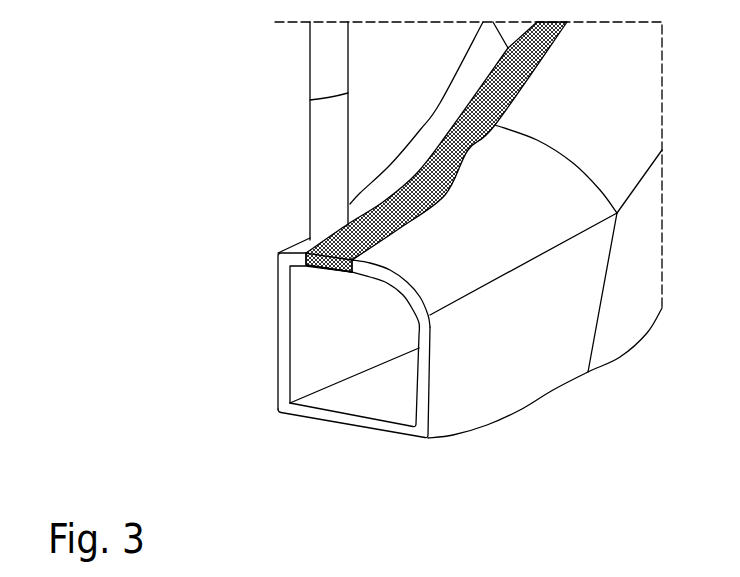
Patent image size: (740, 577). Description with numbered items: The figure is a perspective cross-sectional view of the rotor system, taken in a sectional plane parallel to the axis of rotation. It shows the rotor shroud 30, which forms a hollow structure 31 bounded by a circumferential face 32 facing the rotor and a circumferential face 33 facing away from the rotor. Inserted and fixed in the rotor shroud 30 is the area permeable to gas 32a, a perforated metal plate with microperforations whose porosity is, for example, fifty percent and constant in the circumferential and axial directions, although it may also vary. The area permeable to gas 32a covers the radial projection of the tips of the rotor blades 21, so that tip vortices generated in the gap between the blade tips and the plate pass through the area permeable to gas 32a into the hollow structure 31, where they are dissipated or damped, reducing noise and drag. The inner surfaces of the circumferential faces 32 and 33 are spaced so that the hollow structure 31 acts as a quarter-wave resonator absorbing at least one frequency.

The rotor blades 21 is at (318, 136).
The rotor shroud 30 is at (555, 378).
The hollow structure 31 is at (413, 417).
The circumferential face facing the rotor 32 is at (360, 197).
The area permeable to gas 32a is at (307, 259).
The circumferential face facing away from the rotor 33 is at (342, 405).